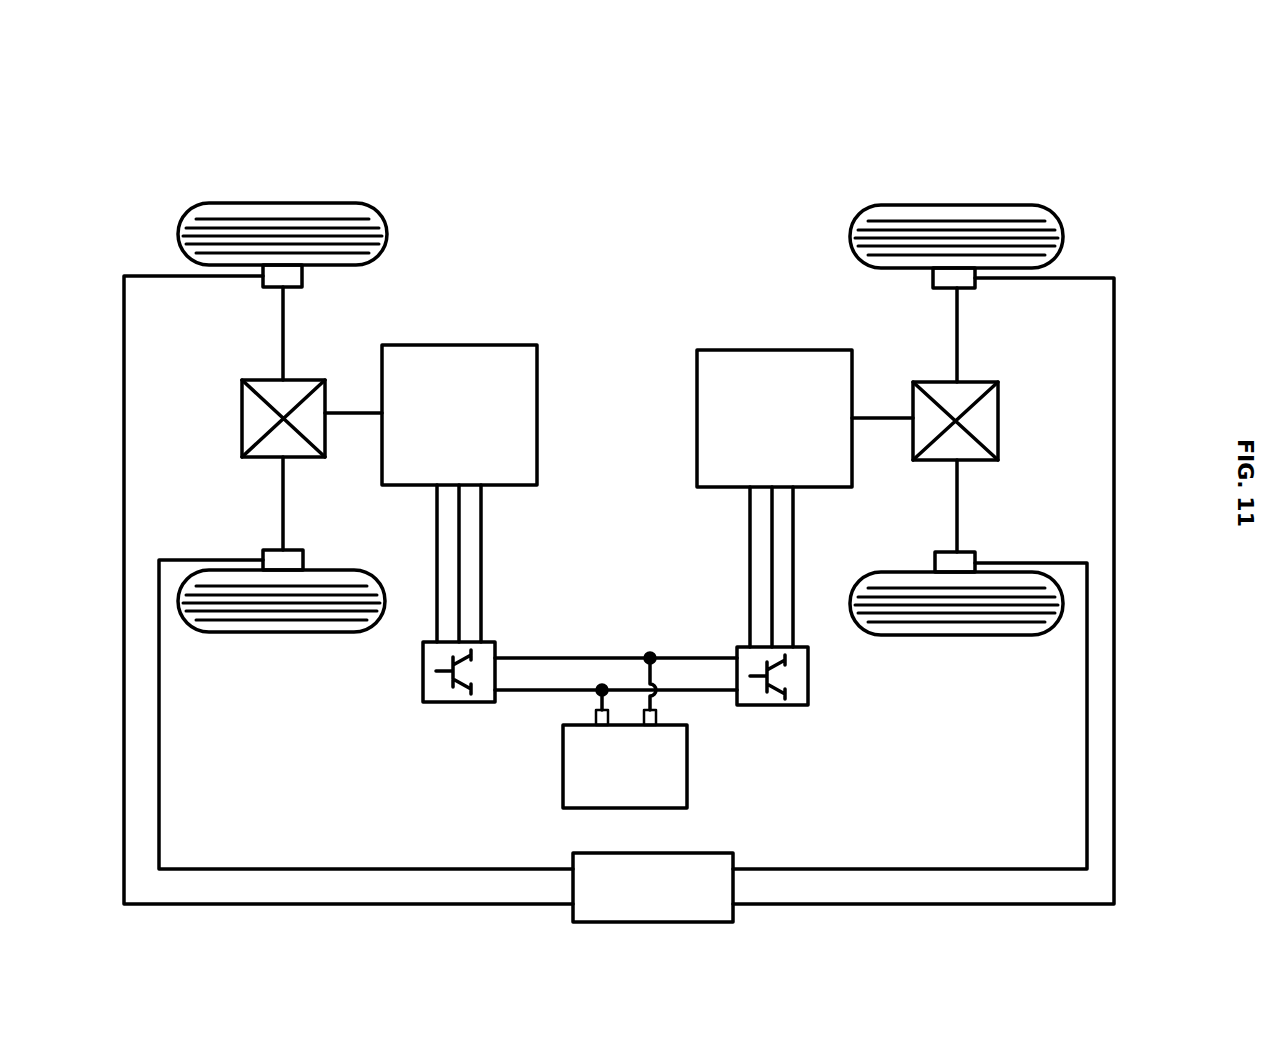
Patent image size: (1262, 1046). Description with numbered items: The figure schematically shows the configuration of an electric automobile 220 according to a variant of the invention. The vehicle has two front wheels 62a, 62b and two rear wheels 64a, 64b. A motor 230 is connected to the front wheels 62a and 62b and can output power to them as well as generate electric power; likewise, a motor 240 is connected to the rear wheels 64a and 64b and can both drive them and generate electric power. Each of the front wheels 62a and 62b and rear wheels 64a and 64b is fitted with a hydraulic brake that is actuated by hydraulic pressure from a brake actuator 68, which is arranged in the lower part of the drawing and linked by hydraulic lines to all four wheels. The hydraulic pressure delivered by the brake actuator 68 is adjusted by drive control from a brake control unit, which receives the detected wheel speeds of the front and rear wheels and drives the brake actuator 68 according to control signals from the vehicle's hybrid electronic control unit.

The electric automobile 220 is at (652, 101).
The rear wheel 64a is at (285, 203).
The rear wheel 64b is at (283, 632).
The front wheel 62a is at (957, 205).
The front wheel 62b is at (957, 635).
The motor 240 is at (460, 345).
The motor 230 is at (775, 350).
The brake actuator 68 is at (700, 853).